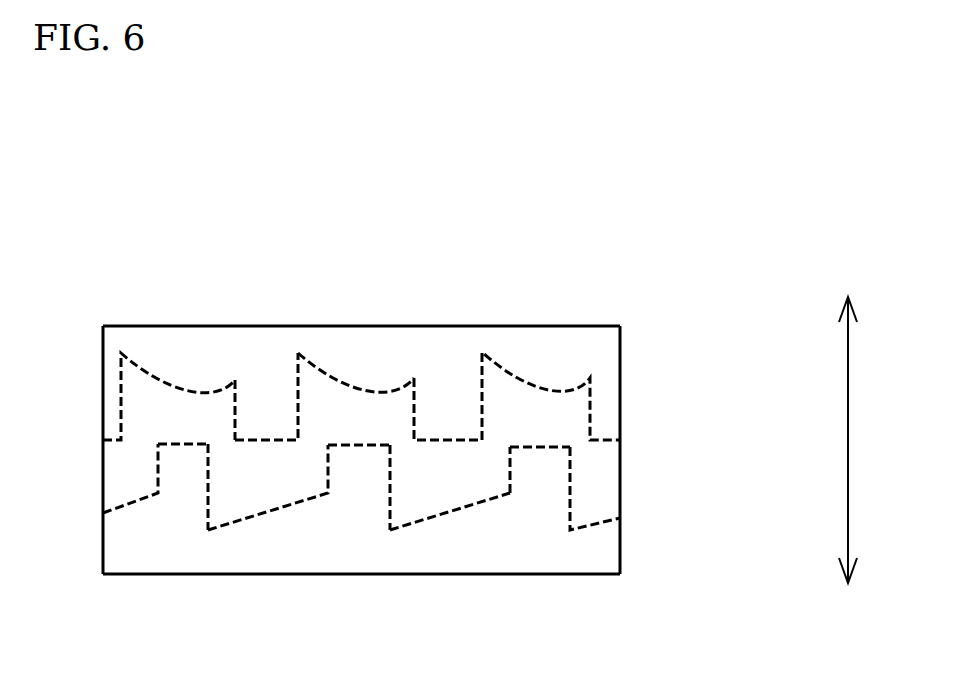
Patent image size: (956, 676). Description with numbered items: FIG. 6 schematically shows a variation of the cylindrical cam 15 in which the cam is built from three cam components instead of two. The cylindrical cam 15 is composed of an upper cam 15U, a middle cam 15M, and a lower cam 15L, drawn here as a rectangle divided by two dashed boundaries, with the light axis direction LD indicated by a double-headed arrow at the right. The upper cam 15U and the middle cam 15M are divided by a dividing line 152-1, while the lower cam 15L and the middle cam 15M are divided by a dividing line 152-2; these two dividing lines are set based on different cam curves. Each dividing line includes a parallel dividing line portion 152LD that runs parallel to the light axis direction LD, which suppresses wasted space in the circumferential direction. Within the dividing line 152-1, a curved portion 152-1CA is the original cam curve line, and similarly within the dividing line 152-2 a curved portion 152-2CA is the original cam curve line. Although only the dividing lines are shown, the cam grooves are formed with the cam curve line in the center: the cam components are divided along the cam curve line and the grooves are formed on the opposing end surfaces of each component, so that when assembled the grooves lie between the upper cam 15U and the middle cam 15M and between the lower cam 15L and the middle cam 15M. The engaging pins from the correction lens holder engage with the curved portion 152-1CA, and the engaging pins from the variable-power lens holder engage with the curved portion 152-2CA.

The cylindrical cam 15 is at (655, 315).
The upper cam 15U is at (620, 378).
The middle cam 15M is at (620, 472).
The lower cam 15L is at (620, 545).
The dividing line 152-1 is at (372, 394).
The curved portion 152-1CA is at (337, 373).
The parallel dividing line portion 152LD is at (237, 400).
The dividing line 152-2 is at (392, 530).
The curved portion 152-2CA is at (453, 517).
The light axis direction LD is at (850, 368).